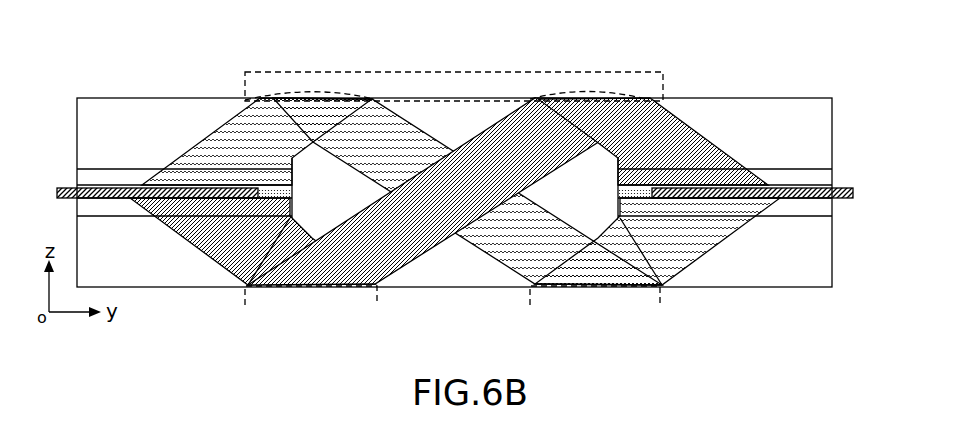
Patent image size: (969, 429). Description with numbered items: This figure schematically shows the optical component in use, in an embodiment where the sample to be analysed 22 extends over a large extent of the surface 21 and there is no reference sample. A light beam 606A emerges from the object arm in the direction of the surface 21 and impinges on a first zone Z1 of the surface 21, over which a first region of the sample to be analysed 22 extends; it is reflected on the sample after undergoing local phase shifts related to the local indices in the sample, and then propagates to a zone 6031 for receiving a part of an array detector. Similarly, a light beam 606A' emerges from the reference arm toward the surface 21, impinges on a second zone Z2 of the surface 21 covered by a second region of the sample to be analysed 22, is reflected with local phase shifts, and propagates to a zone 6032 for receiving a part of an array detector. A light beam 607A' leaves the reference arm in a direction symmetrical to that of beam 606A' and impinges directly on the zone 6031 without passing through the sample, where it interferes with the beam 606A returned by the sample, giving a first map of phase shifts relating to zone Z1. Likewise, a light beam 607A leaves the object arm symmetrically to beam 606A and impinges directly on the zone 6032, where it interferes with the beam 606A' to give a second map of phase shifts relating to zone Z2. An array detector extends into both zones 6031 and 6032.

The light beam 606A is at (257, 102).
The first zone of the surface Z1 is at (313, 92).
The sample to be analysed 22 is at (410, 72).
The surface 21 is at (468, 98).
The light beam 606A' is at (653, 102).
The second zone of the surface Z2 is at (610, 92).
The light beam 607A is at (252, 283).
The zone for receiving a part of an array detector 6032 is at (357, 292).
The zone for receiving a part of an array detector 6031 is at (582, 292).
The light beam 607A' is at (657, 283).